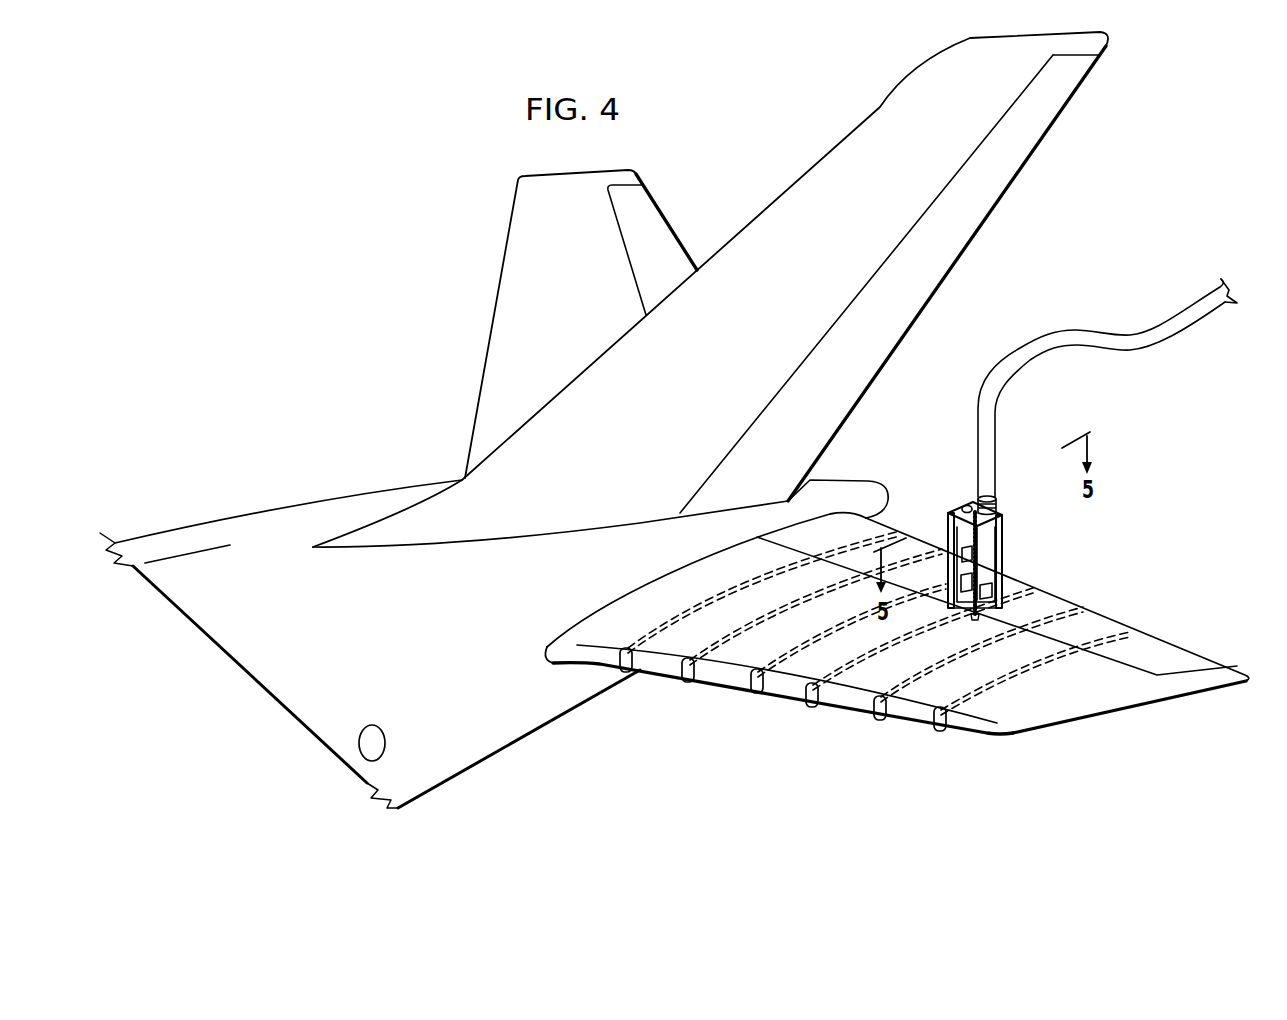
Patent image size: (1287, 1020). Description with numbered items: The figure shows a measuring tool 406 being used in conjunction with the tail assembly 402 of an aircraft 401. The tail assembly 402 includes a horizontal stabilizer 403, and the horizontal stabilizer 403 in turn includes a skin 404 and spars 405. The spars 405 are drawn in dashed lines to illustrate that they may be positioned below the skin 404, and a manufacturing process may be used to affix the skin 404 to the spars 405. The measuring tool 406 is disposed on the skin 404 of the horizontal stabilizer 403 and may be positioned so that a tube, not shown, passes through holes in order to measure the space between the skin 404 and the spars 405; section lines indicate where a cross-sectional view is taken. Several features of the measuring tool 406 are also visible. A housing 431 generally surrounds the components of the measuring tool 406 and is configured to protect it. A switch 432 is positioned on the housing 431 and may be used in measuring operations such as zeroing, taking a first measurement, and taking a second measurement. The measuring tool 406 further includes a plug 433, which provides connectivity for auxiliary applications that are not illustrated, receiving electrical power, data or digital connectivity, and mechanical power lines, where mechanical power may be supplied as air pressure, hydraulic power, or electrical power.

The aircraft 401 is at (306, 231).
The tail assembly 402 is at (843, 133).
The horizontal stabilizer 403 is at (634, 604).
The skin 404 is at (1107, 708).
The spars 405 is at (677, 676).
The measuring tool 406 is at (1084, 449).
The housing 431 is at (1004, 557).
The switch 432 is at (963, 504).
The plug 433 is at (999, 503).